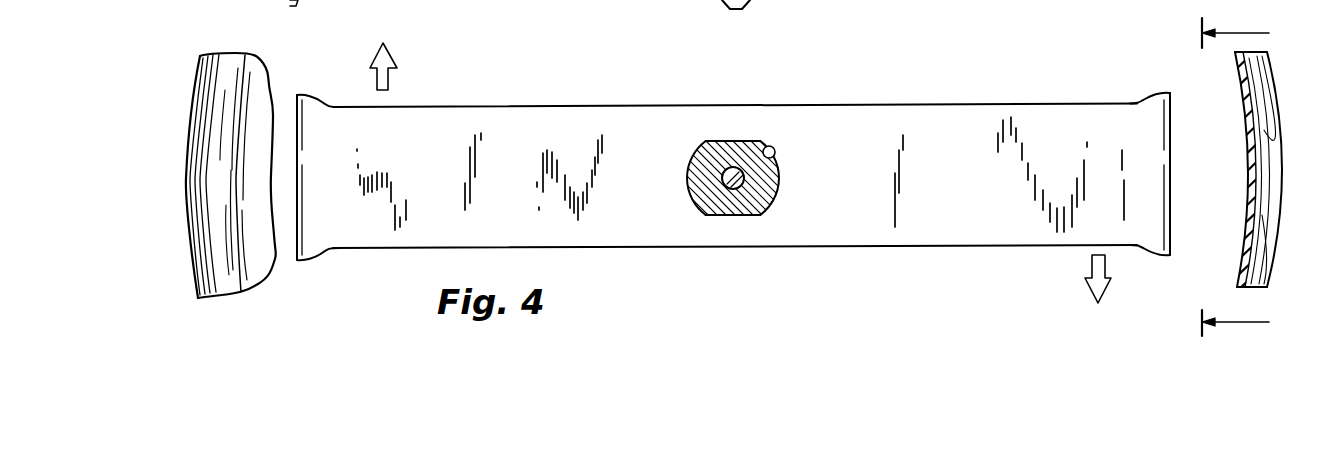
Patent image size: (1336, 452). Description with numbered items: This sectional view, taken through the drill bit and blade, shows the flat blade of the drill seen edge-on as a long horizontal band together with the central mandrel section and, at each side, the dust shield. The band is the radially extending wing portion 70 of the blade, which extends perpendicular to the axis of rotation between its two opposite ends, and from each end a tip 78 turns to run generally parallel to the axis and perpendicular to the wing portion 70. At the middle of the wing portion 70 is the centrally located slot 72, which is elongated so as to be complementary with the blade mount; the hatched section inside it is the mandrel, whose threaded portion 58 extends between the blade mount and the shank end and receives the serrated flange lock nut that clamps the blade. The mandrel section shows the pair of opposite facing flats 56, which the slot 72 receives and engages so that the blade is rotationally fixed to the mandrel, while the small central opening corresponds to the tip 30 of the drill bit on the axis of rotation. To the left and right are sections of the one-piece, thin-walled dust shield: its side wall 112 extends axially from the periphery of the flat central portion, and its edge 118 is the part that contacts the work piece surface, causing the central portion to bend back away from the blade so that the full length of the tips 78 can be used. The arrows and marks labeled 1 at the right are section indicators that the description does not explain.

The section line 1- 1 is at (1246, 177).
The tip 30 is at (722, 177).
The flats 56 is at (738, 140).
The threaded portion 58 is at (758, 203).
The wing portion 70 is at (982, 177).
The slot 72 is at (777, 163).
The tips 78 is at (327, 120).
The side wall 112 is at (190, 183).
The edge 118 is at (1275, 173).